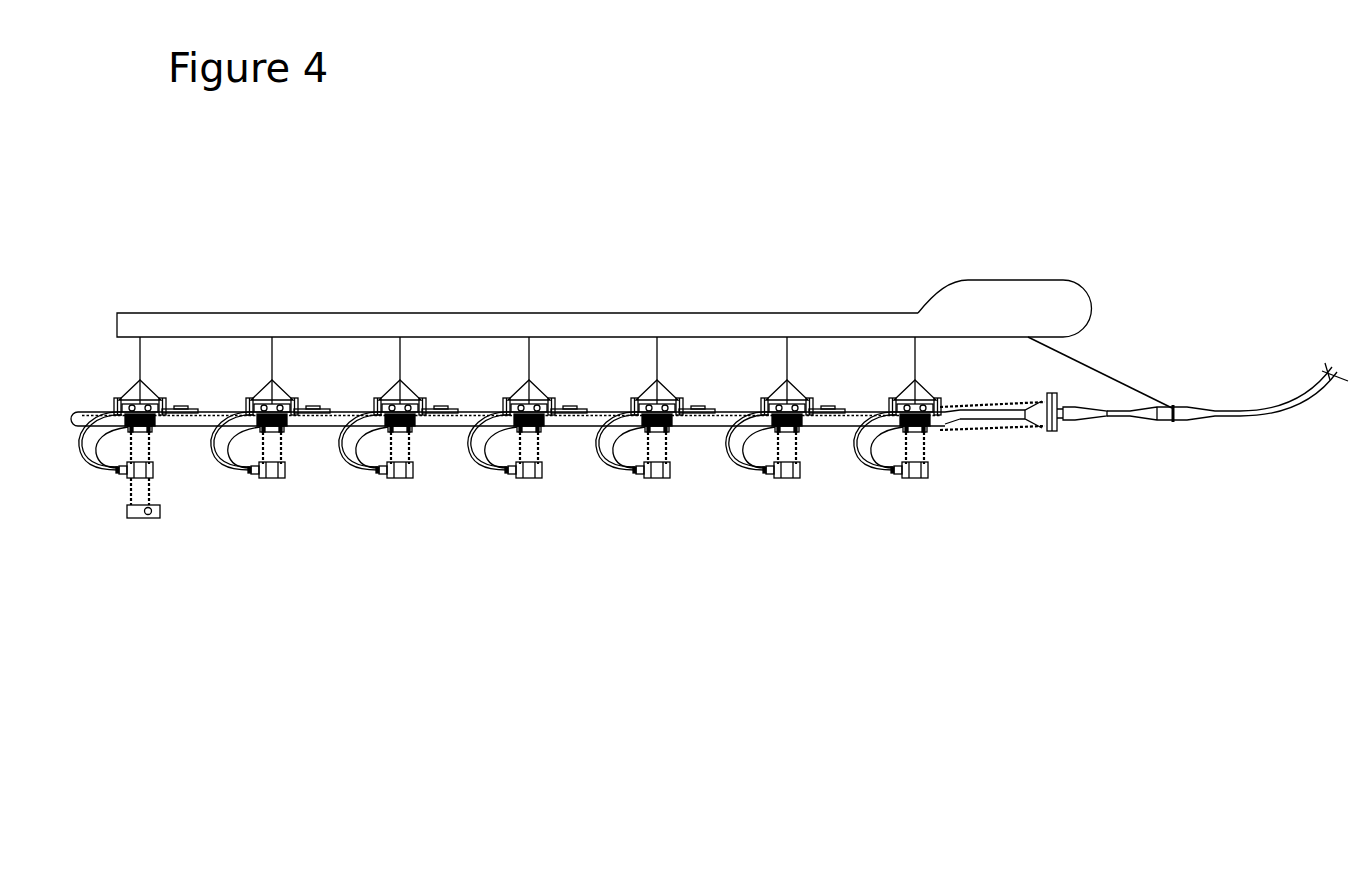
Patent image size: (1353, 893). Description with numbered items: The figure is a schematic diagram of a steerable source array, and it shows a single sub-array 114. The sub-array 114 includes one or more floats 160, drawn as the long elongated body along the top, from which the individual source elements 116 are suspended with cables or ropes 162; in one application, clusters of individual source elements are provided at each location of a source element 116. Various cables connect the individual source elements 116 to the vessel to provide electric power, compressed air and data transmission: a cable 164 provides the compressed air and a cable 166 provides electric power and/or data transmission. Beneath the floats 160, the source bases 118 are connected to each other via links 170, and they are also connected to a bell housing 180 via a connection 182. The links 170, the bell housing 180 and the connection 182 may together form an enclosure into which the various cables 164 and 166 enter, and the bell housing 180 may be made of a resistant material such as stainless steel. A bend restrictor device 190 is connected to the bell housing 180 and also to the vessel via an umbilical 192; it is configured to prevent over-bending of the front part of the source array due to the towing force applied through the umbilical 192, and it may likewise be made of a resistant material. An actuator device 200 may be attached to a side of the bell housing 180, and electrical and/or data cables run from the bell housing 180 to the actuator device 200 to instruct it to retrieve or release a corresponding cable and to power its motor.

The sub-array 114 is at (609, 232).
The source elements 116 is at (398, 480).
The source bases 118 is at (672, 428).
The floats 160 is at (1003, 301).
The cables or ropes 162 is at (405, 391).
The cable 164 is at (474, 449).
The cable 166 is at (494, 462).
The links 170 is at (873, 410).
The bell housing 180 is at (1072, 413).
The connection 182 is at (990, 425).
The bend restrictor device 190 is at (1177, 421).
The umbilical 192 is at (1270, 408).
The actuator device 200 is at (1047, 394).